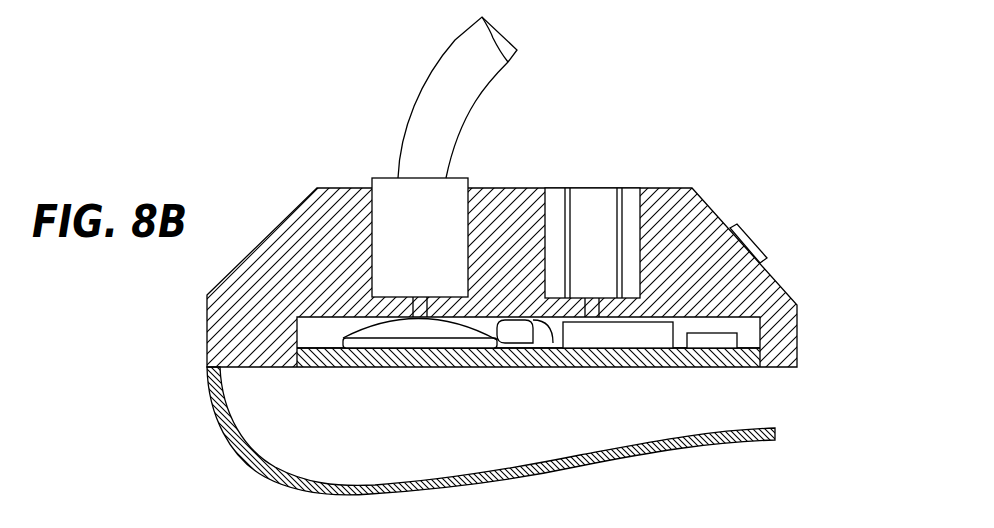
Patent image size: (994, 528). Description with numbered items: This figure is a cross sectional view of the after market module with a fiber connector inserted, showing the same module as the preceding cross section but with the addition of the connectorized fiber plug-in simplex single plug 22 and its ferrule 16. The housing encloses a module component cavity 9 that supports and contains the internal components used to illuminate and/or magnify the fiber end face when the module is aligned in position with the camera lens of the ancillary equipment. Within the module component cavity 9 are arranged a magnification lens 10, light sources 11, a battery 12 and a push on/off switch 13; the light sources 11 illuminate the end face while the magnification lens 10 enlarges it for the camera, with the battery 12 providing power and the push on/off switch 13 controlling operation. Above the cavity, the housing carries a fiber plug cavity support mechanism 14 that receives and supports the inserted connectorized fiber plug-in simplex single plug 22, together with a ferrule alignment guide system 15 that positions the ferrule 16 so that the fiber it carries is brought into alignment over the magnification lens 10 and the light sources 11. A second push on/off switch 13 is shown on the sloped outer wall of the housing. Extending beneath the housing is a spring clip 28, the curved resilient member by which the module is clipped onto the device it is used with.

The module component cavity 9 is at (763, 333).
The magnification lens 10 is at (400, 332).
The light sources 11 is at (527, 345).
The battery 12 is at (622, 343).
The push on/off switch 13 is at (710, 347).
The fiber plug cavity support mechanism 14 is at (557, 188).
The ferrule alignment guide system 15 is at (593, 303).
The ferrule 16 is at (418, 315).
The connectorized fiber plug-in simplex single plug 22 is at (388, 178).
The spring clip 28 is at (223, 437).